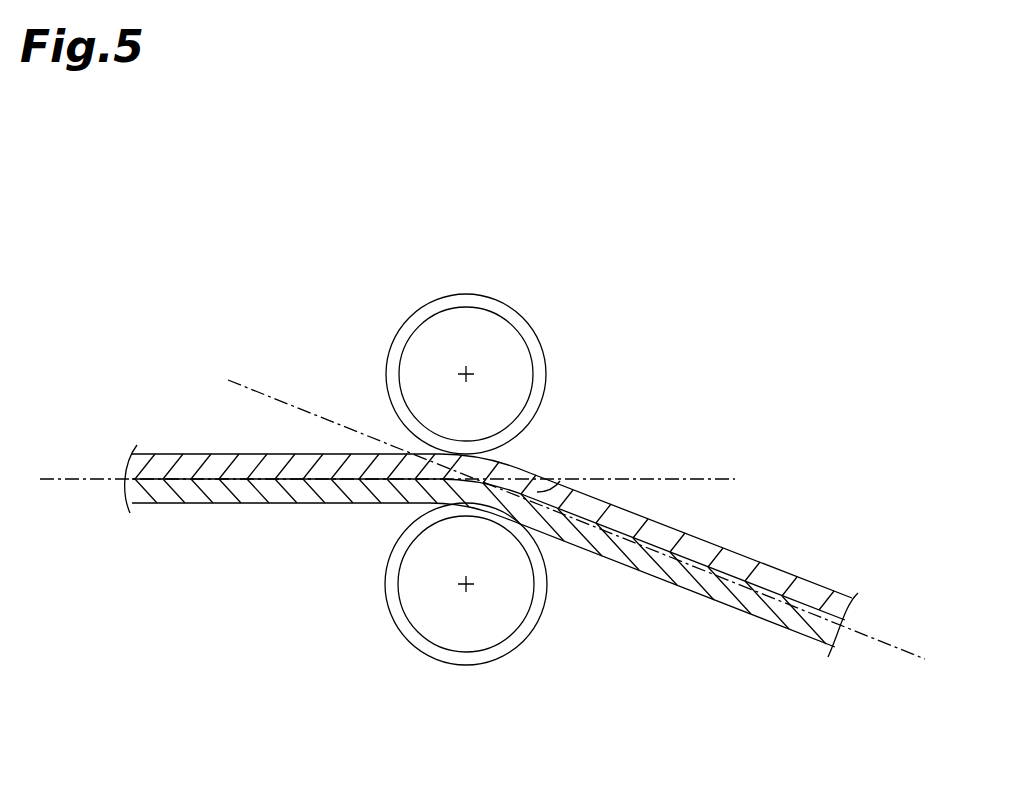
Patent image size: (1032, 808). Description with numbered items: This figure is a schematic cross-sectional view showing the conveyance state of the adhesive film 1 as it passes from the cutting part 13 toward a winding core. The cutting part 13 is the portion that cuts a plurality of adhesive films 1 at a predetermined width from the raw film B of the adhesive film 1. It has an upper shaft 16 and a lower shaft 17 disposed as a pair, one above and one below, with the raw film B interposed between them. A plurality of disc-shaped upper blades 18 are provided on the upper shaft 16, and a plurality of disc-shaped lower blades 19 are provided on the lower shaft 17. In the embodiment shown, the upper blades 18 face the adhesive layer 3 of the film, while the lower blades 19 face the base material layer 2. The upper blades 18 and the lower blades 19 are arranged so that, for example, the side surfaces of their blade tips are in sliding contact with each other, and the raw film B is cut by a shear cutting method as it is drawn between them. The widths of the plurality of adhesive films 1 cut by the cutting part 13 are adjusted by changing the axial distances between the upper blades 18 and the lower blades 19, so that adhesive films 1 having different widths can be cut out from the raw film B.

The adhesive film 1 is at (491, 527).
The base material layer 2 is at (274, 492).
The adhesive layer 3 is at (247, 465).
The cutting part 13 is at (451, 464).
The upper shaft 16 is at (500, 332).
The lower shaft 17 is at (443, 625).
The upper blade 18 is at (470, 297).
The lower blade 19 is at (497, 652).
The raw film B is at (197, 437).